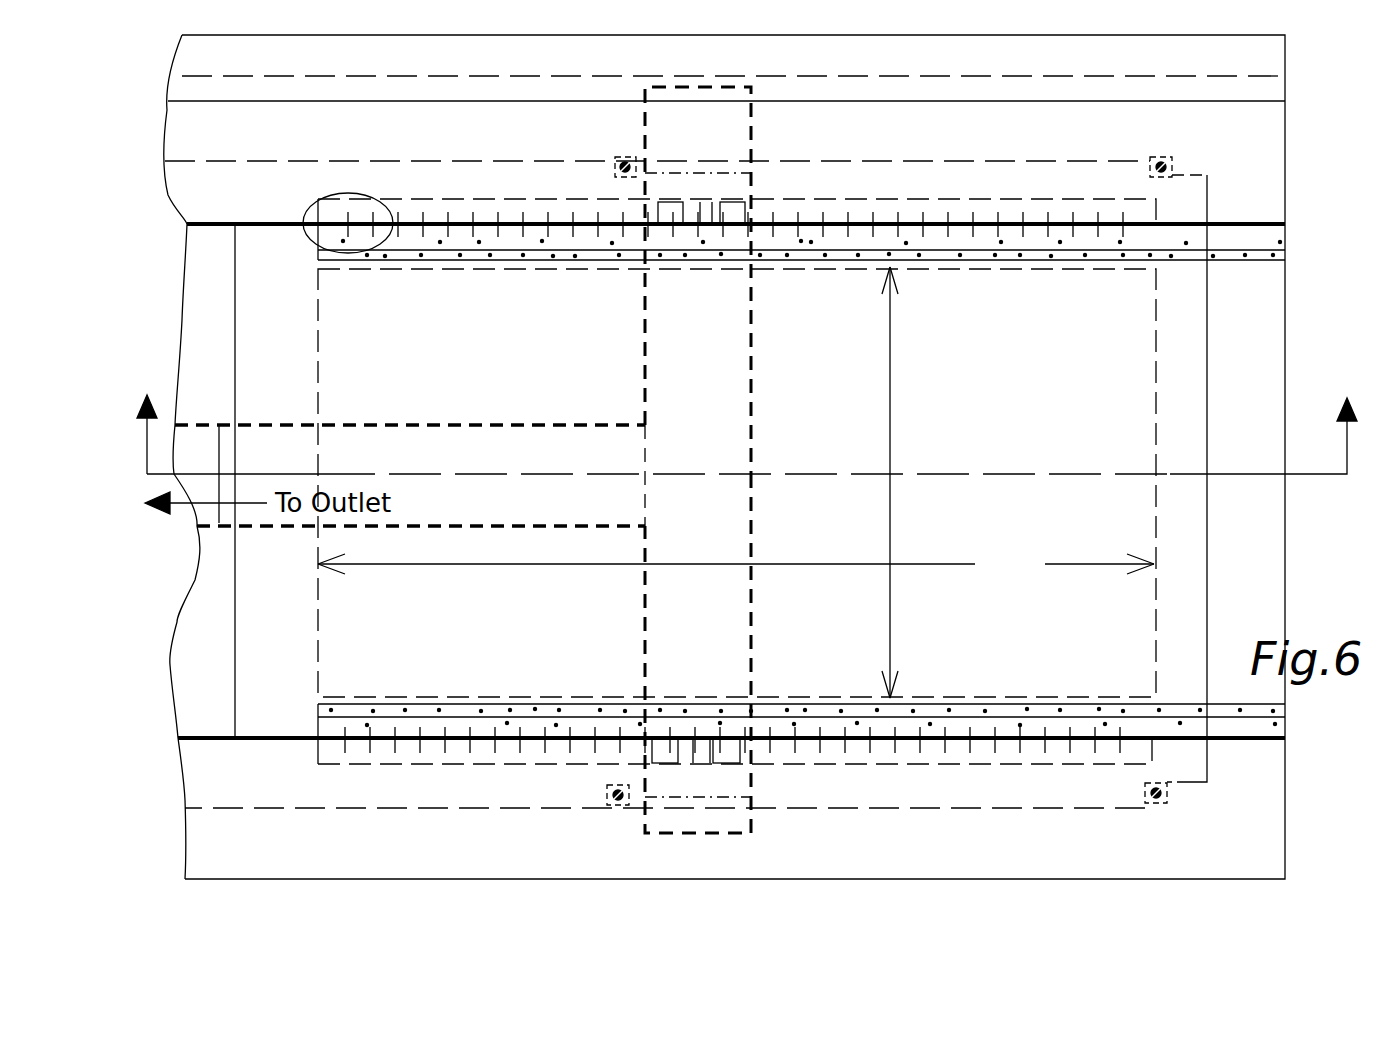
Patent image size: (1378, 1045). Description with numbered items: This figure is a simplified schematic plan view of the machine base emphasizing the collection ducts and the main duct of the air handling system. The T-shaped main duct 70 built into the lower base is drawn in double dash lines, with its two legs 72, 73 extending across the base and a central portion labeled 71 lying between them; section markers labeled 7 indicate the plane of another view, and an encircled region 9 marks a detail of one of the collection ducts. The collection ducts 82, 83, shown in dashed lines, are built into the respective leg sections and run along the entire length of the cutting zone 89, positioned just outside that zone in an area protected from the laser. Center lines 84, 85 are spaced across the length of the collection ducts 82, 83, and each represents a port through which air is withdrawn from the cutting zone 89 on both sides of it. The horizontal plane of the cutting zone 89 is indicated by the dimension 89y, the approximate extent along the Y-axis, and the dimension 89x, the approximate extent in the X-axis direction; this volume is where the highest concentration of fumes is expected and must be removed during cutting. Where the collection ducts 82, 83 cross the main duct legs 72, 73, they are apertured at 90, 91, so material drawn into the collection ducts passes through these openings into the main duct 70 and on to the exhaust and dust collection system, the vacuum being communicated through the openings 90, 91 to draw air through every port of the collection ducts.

The section line 7- 7 is at (745, 405).
The detail region 9 is at (305, 212).
The main duct 70 is at (577, 528).
The upper duct section 71 is at (718, 375).
The main duct leg 72 is at (718, 617).
The main duct leg 73 is at (498, 517).
The collection duct 82 is at (1010, 757).
The collection duct 83 is at (1066, 212).
The center lines 84 is at (942, 742).
The center lines 85 is at (1000, 236).
The cutting zone 89 is at (848, 415).
The X-axis extent of cutting zone 89x is at (897, 482).
The Y-axis extent of cutting zone 89y is at (736, 565).
The aperture 90 is at (728, 762).
The aperture 91 is at (737, 202).